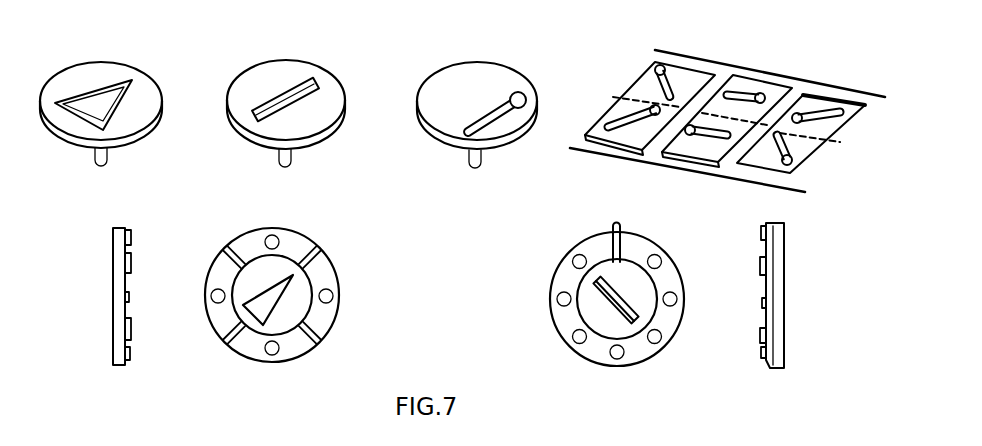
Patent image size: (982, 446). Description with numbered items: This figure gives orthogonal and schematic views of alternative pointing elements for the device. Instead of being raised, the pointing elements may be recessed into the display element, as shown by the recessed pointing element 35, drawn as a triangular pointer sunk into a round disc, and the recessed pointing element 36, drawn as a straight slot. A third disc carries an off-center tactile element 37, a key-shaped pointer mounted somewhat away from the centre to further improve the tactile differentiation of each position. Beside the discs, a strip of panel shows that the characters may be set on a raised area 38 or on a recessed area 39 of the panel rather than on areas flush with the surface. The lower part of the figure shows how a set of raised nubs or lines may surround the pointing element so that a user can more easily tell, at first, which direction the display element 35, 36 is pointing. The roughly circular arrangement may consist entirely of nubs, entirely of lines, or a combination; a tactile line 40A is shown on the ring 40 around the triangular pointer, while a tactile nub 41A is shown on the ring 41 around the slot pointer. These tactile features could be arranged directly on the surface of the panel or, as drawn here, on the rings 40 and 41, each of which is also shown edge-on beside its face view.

The recessed pointing element 35 is at (160, 118).
The recessed pointing element 36 is at (343, 118).
The off-center tactile element 37 is at (535, 122).
The raised area 38 is at (697, 147).
The recessed area 39 is at (840, 128).
The ring 40 is at (252, 358).
The tactile line 40A is at (223, 252).
The ring 41 is at (778, 368).
The tactile nub 41A is at (765, 270).